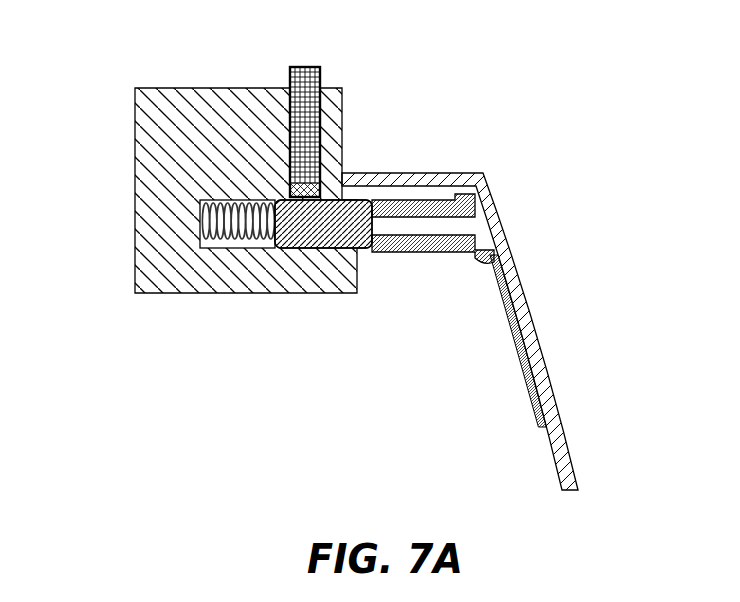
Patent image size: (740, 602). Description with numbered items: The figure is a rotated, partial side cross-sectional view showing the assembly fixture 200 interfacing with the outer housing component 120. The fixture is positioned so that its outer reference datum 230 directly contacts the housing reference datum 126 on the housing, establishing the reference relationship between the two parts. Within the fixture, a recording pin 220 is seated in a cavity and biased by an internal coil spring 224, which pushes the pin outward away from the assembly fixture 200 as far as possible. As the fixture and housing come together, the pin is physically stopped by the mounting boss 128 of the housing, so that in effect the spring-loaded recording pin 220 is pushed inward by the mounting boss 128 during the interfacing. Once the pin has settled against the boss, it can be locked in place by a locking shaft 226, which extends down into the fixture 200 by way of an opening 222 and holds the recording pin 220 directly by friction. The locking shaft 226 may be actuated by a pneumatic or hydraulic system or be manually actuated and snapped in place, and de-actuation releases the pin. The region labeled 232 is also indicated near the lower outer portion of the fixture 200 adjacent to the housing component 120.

The outer housing component 120 is at (548, 407).
The housing reference datum 126 is at (326, 178).
The mounting boss 128 is at (462, 240).
The assembly fixture 200 is at (145, 121).
The recording pin 220 is at (318, 243).
The opening 222 is at (278, 81).
The internal coil spring 224 is at (222, 238).
The locking shaft 226 is at (301, 75).
The outer reference datum 230 is at (358, 110).
The block lower step 232 is at (370, 289).